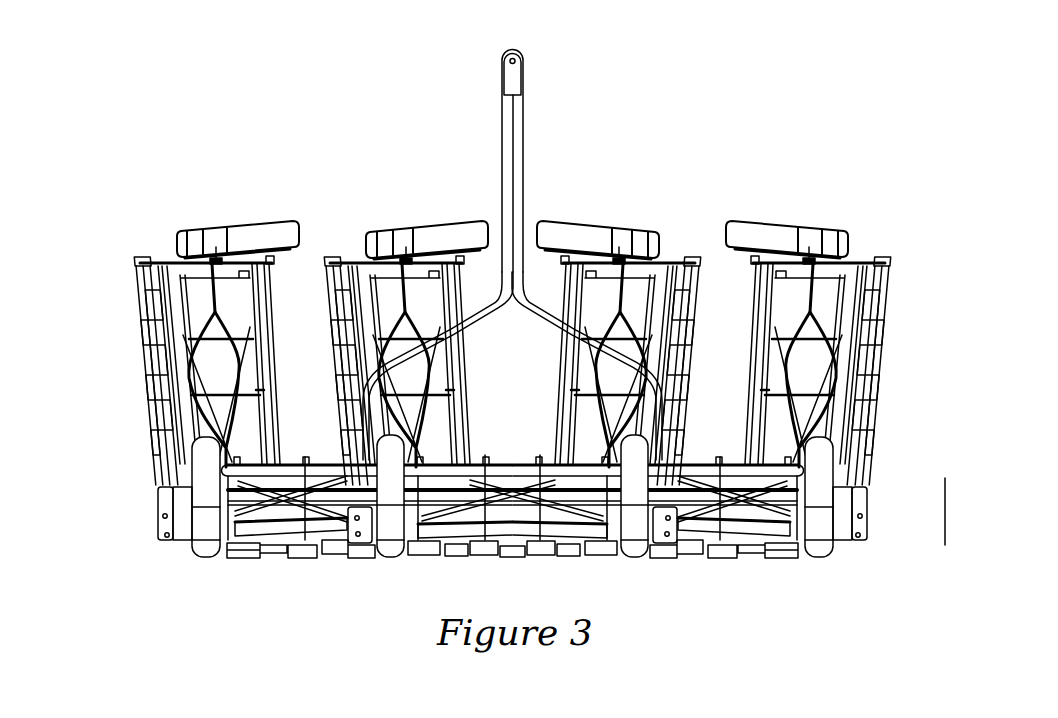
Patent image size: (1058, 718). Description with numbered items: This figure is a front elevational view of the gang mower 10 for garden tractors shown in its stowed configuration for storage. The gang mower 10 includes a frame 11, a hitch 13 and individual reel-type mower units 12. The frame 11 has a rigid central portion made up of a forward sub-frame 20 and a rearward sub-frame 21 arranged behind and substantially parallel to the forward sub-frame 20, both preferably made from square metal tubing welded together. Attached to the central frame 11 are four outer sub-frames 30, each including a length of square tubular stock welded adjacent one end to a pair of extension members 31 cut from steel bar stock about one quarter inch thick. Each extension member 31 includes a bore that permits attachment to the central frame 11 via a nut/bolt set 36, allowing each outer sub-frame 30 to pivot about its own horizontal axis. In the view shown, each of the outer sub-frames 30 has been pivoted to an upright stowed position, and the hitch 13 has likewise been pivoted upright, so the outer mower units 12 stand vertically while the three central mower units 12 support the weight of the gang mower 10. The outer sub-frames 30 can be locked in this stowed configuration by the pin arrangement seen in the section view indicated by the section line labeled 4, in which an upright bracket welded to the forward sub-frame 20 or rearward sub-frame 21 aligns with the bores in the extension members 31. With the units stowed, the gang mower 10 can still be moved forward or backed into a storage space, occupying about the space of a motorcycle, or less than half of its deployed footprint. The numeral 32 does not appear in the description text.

The gang mower 10 is at (668, 126).
The frame 11 is at (181, 549).
The mower unit 12 is at (233, 222).
The hitch 13 is at (497, 130).
The forward sub-frame 20 is at (665, 544).
The rearward sub-frame 21 is at (840, 542).
The outer sub-frame 30 is at (140, 317).
The extension member 31 is at (157, 494).
The upper aperture 32 is at (160, 518).
The nut/bolt set 36 is at (163, 538).
The section line 4- 4 is at (945, 478).